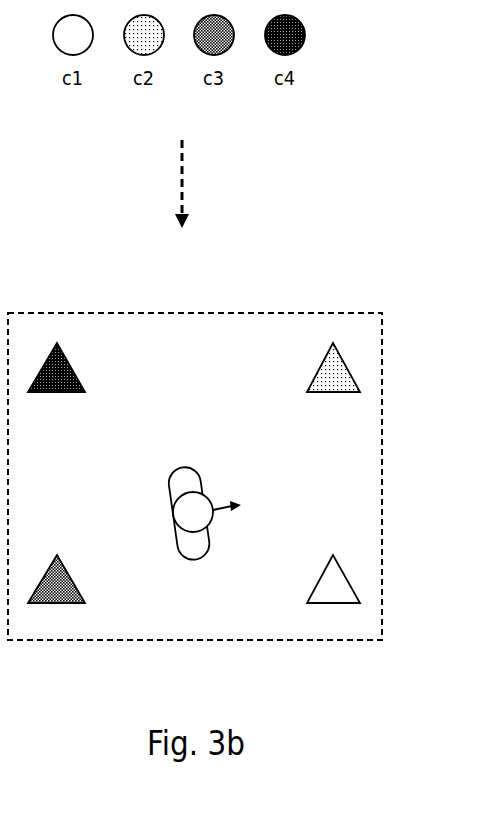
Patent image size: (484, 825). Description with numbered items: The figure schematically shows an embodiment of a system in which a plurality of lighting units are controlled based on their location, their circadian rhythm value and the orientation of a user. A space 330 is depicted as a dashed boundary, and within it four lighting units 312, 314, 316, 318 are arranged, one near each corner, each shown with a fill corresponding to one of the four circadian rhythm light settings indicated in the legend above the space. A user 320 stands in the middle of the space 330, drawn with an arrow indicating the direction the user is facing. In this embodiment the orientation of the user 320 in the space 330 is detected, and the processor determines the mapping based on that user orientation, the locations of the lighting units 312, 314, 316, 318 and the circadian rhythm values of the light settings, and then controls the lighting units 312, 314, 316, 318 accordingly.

The lighting unit 312 is at (68, 392).
The lighting unit 314 is at (335, 392).
The lighting unit 316 is at (68, 572).
The lighting unit 318 is at (322, 587).
The user 320 is at (182, 478).
The space 330 is at (326, 313).